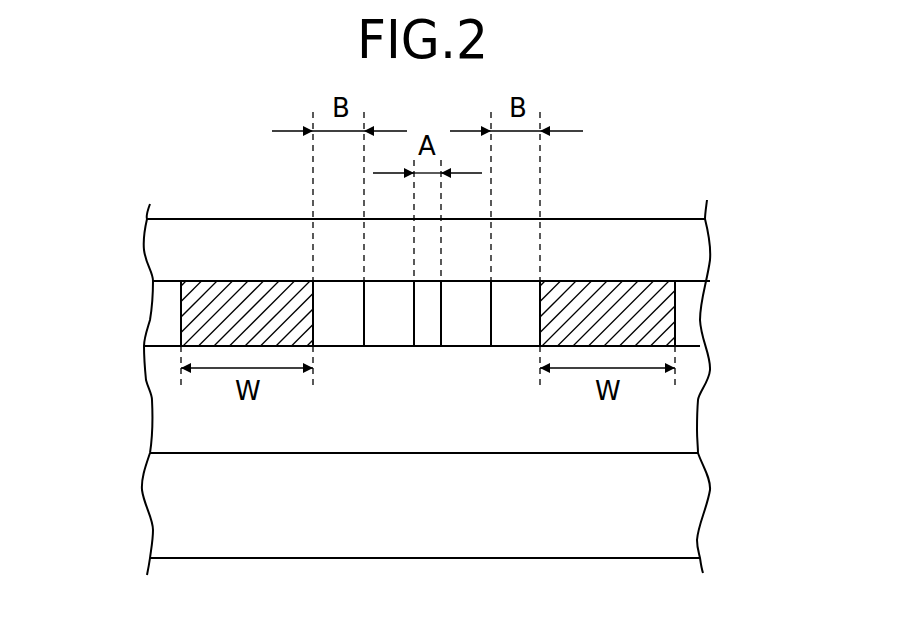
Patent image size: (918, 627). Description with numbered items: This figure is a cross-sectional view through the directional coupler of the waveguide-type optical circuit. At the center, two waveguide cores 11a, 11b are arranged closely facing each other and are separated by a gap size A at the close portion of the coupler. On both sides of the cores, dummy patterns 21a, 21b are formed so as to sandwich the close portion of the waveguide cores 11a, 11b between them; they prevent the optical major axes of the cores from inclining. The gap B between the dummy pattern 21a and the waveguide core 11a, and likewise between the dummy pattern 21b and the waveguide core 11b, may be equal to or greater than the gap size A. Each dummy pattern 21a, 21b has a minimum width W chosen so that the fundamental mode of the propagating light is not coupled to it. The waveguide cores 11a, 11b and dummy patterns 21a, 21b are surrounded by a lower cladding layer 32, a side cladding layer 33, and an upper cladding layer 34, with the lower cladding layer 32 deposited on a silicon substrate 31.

The upper cladding layer 34 is at (673, 245).
The side cladding layer 33 is at (690, 312).
The lower cladding layer 32 is at (685, 382).
The silicon substrate 31 is at (688, 508).
The dummy pattern 21a is at (240, 281).
The dummy pattern 21b is at (606, 281).
The waveguide core 11a is at (385, 329).
The waveguide core 11b is at (467, 329).